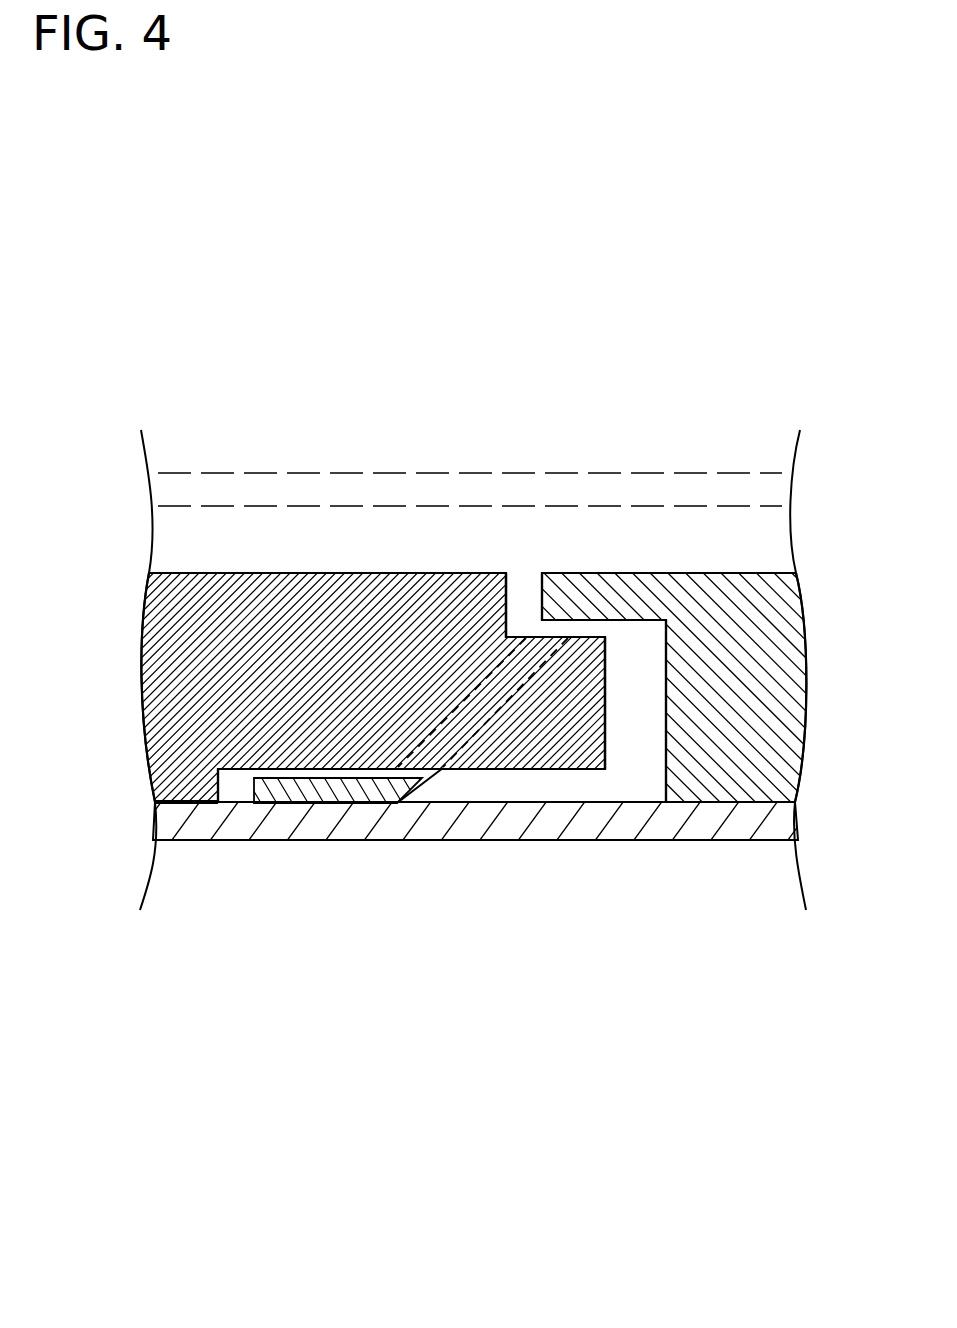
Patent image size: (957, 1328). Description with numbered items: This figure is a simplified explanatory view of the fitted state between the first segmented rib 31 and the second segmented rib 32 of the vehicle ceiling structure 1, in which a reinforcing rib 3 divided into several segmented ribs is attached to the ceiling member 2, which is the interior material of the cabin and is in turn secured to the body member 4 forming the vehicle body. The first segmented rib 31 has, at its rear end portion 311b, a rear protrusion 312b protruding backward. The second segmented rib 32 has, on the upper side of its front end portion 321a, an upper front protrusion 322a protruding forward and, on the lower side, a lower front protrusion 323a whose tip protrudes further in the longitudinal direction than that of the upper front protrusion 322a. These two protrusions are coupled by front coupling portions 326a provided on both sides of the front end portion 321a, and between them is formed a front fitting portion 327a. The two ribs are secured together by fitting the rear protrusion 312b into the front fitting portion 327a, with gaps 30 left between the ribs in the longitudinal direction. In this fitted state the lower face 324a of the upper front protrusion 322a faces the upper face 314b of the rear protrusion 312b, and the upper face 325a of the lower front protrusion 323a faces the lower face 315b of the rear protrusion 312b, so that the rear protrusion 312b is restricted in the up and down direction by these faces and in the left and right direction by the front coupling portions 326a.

The vehicle ceiling structure 1 is at (589, 1063).
The ceiling member 2 is at (323, 817).
The reinforcing rib 3 is at (210, 572).
The body member 4 is at (327, 493).
The gap 30 is at (517, 583).
The first segmented rib 31 is at (297, 625).
The second segmented rib 32 is at (735, 758).
The rear end portion 311b is at (472, 615).
The rear protrusion 312b is at (500, 747).
The upper face 314b is at (530, 630).
The lower face 315b is at (537, 768).
The front end portion 321a is at (728, 618).
The upper front protrusion 322a is at (615, 597).
The lower front protrusion 323a is at (367, 797).
The lower face 324a is at (601, 645).
The upper face 325a is at (360, 770).
The front coupling portion 326a is at (563, 616).
The front fitting portion 327a is at (665, 700).